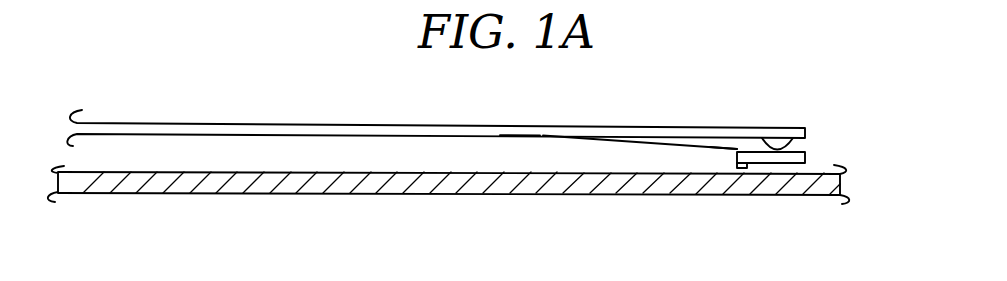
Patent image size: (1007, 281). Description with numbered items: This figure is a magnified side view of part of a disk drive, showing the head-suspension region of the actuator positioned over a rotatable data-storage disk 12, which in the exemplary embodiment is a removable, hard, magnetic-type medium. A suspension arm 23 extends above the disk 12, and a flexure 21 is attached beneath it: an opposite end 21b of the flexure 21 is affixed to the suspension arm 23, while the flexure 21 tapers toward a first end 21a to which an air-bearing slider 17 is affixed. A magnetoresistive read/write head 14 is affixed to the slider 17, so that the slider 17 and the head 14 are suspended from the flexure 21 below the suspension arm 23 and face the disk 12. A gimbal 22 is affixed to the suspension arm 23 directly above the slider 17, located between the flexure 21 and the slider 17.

The suspension arm 23 is at (218, 123).
The data disk 12 is at (202, 194).
The flexure 21 is at (632, 146).
The opposite end of the flexure 21b is at (518, 138).
The first end of the flexure 21a is at (723, 150).
The gimbal 22 is at (806, 143).
The air-bearing slider 17 is at (805, 156).
The magnetoresistive read/write head 14 is at (737, 168).